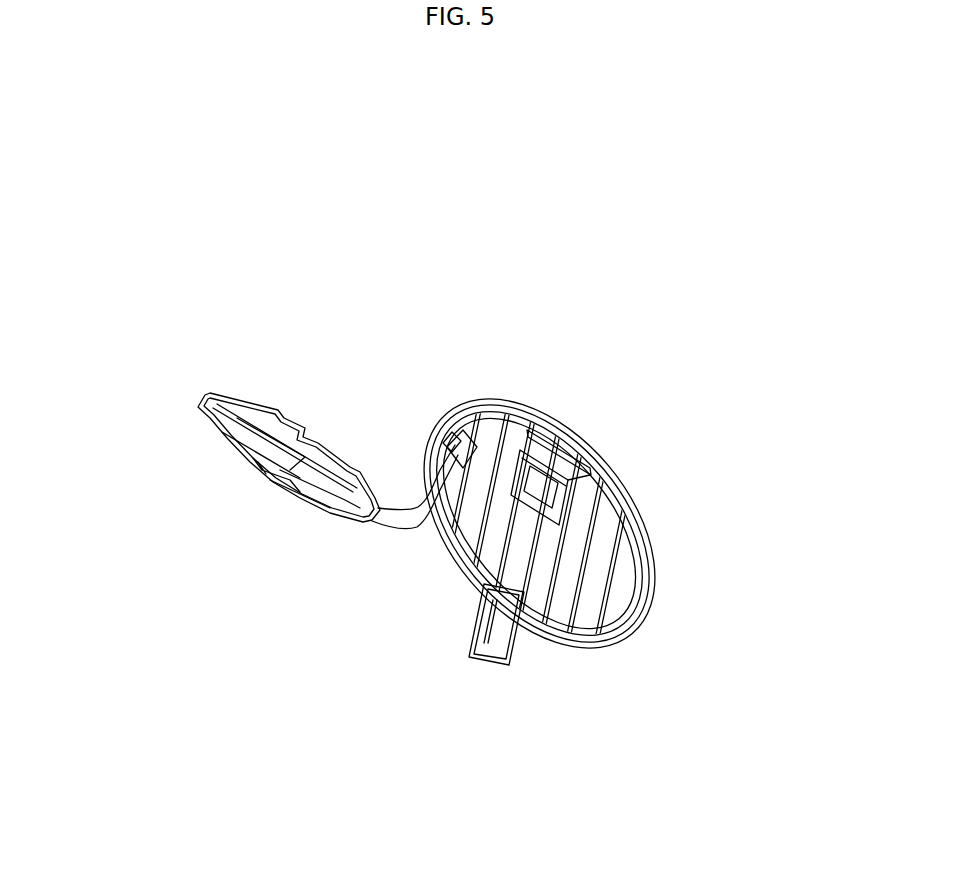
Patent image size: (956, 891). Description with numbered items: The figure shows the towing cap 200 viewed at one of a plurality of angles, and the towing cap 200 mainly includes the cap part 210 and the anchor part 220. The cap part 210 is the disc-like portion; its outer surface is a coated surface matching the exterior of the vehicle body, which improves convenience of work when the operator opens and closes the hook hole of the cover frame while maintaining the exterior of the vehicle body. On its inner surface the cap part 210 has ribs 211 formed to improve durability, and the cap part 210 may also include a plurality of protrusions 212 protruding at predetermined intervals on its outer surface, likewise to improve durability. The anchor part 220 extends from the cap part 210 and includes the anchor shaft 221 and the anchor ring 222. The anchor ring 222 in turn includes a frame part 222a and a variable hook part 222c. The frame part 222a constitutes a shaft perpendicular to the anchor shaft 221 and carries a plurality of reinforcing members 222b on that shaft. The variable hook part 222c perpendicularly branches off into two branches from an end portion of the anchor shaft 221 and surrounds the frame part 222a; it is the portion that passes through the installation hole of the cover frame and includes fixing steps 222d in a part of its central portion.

The towing cap 200 is at (478, 123).
The cap part 210 is at (664, 497).
The ribs 211 is at (598, 612).
The protrusions 212 is at (488, 398).
The anchor part 220 is at (359, 556).
The anchor shaft 221 is at (422, 508).
The anchor ring 222 is at (163, 593).
The frame part 222a is at (258, 460).
The reinforcing members 222b is at (232, 435).
The variable hook part 222c is at (205, 407).
The fixing steps 222d is at (270, 476).